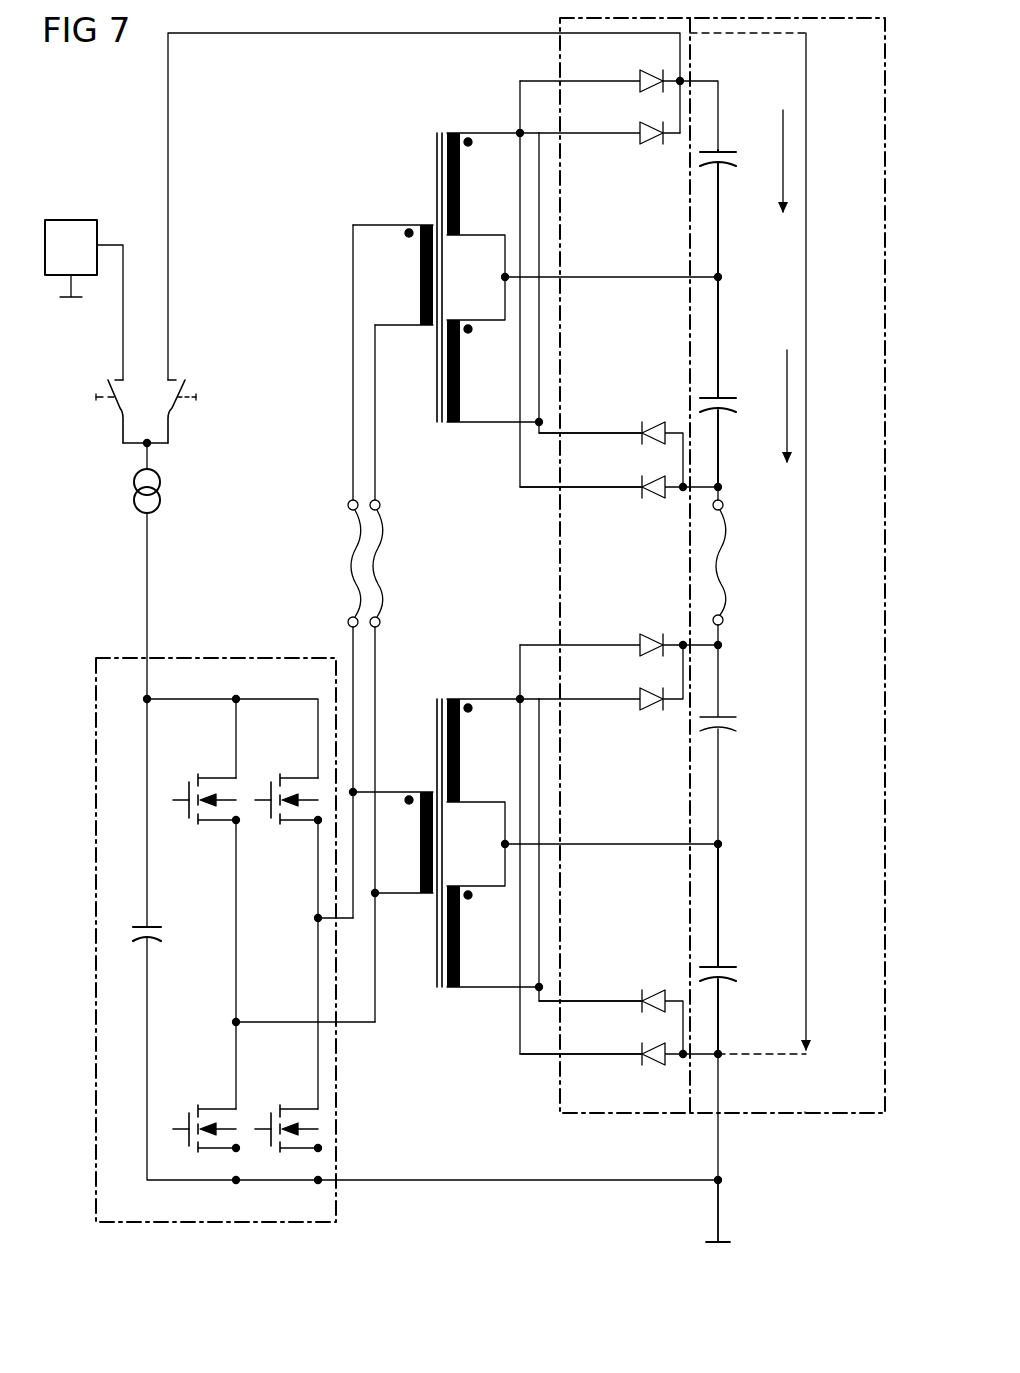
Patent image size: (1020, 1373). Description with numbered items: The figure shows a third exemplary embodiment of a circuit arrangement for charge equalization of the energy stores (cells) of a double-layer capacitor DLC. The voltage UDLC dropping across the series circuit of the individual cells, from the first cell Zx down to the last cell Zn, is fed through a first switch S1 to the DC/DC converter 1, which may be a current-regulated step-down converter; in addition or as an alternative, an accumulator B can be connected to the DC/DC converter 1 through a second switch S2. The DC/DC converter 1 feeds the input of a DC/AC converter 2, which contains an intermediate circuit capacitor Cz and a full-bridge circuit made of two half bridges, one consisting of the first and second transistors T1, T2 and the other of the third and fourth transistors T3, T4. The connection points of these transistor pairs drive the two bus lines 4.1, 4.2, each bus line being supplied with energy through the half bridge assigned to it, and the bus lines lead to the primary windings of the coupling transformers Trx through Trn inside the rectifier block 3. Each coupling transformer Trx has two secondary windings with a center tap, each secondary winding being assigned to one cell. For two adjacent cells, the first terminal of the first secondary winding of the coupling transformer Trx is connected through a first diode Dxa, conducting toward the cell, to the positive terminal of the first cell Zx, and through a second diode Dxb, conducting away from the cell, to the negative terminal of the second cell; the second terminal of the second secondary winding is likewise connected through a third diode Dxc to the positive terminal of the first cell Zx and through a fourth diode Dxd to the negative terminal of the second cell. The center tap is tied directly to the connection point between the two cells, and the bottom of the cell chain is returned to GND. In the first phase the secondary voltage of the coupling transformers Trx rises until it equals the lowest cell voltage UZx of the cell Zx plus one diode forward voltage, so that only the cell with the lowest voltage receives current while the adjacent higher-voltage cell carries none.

The DC/DC converter 1 is at (160, 483).
The DC/AC converter 2 is at (218, 658).
The rectifier and capacitor unit 3 is at (555, 1098).
The bus line 4.1 is at (352, 450).
The bus line 4.2 is at (375, 450).
The accumulator B is at (84, 300).
The first switch S1 is at (178, 405).
The second switch S2 is at (118, 405).
The first transistor T1 is at (273, 778).
The second transistor T2 is at (273, 1109).
The third transistor T3 is at (192, 778).
The fourth transistor T4 is at (192, 1109).
The intermediate circuit capacitor Cz is at (152, 925).
The coupling transformer Trx is at (412, 160).
The coupling transformer Trn is at (430, 982).
The first diode Dxa is at (640, 78).
The second diode Dxb is at (642, 430).
The third diode Dxc is at (640, 130).
The fourth diode Dxd is at (642, 482).
The first cell Zx is at (727, 150).
The cell Zn is at (727, 965).
The cell voltage UZx is at (774, 180).
The voltage UDLC is at (774, 543).
The double-layer capacitor DLC is at (806, 1115).
The ground GND is at (721, 1227).